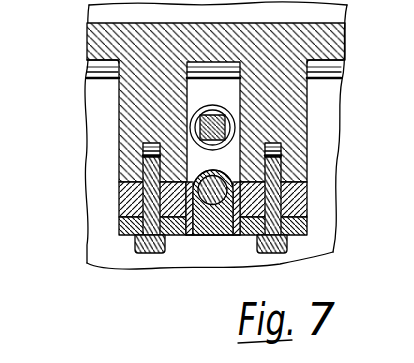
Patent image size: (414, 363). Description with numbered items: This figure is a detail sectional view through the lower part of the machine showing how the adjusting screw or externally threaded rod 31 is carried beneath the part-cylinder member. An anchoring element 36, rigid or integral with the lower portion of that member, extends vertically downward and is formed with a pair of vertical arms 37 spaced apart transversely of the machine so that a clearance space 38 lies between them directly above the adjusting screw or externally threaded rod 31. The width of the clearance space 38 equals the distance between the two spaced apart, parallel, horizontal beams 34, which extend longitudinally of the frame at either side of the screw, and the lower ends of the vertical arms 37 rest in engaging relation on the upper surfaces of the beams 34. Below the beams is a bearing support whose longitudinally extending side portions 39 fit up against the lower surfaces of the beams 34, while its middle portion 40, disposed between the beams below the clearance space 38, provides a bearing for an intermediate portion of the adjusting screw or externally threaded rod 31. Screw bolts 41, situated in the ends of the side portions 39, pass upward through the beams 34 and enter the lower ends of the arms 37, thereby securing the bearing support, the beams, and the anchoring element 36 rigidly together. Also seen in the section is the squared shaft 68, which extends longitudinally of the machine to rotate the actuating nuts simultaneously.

The adjusting screw or externally threaded rod 31 is at (212, 196).
The horizontal beams 34 is at (119, 203).
The anchoring element 36 is at (307, 114).
The vertical arms 37 is at (119, 101).
The clearance space 38 is at (187, 160).
The longitudinally extending side portions 39 is at (119, 234).
The middle portion 40 is at (233, 200).
The screw bolts 41 is at (146, 253).
The squared shaft 68 is at (230, 120).